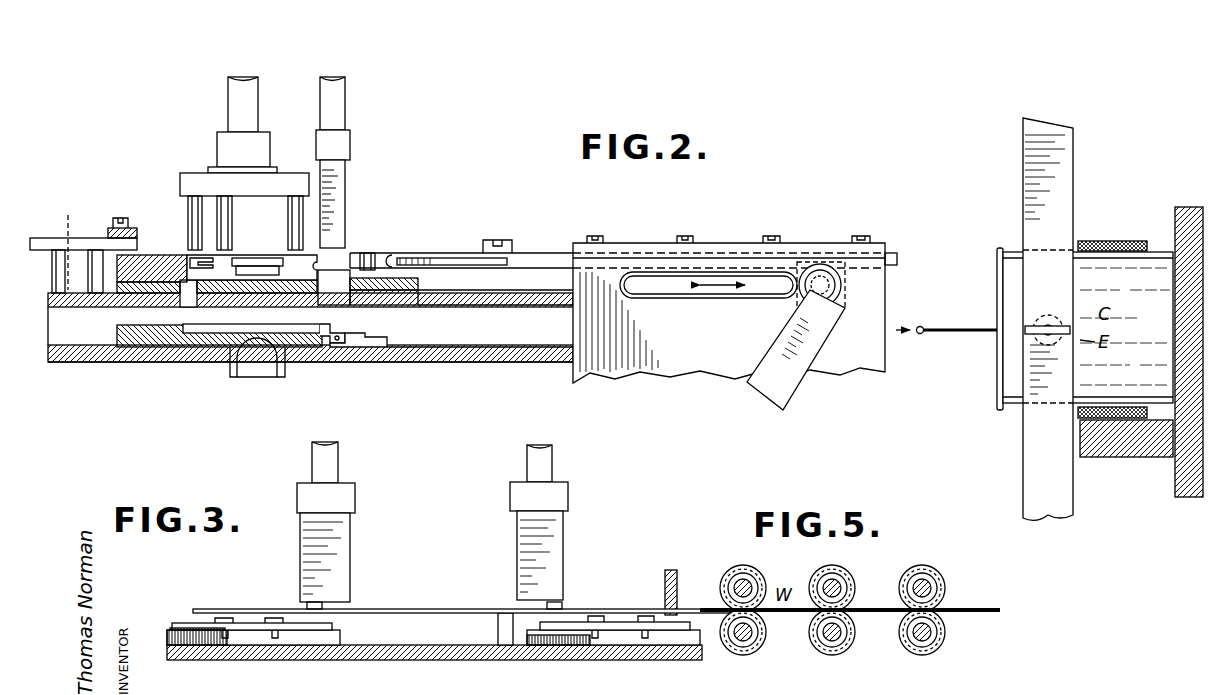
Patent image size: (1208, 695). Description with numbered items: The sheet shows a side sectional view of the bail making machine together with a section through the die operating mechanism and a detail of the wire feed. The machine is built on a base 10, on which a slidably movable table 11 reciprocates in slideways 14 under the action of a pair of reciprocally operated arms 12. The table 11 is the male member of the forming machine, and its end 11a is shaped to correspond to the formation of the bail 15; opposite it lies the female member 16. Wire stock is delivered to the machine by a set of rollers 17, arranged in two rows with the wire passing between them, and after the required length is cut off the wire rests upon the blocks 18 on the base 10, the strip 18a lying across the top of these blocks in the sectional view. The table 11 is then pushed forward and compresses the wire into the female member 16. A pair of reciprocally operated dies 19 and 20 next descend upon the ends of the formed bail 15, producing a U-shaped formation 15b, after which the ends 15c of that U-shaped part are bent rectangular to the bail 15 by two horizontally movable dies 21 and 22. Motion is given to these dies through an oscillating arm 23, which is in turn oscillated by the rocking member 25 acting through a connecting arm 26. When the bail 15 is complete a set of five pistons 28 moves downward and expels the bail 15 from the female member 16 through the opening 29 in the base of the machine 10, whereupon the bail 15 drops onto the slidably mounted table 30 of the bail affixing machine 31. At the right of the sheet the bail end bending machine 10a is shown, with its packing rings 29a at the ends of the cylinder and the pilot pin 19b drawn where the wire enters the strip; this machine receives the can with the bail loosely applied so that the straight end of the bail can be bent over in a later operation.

In FIG. 3, the base 10 is at (653, 662).
In FIG. 2, the bail end bending machine 10a is at (1021, 226).
In FIG. 2, the slidably movable table 11 is at (448, 262).
In FIG. 2, the end of the table 11a is at (395, 249).
In FIG. 2, the reciprocally operated arms 12 is at (793, 331).
In FIG. 2, the slideways 14 is at (633, 250).
In FIG. 2, the bail 15 is at (228, 330).
In FIG. 2, the U-shaped formation 15b is at (340, 325).
In FIG. 2, the ends of the U-shaped bent part 15c is at (365, 334).
In FIG. 2, the female member 16 is at (272, 256).
In FIG. 5, the rollers 17 is at (812, 572).
In FIG. 3, the blocks 18 is at (360, 630).
In FIG. 3, the strip 18a is at (446, 609).
In FIG. 3, the reciprocally operated die 19 is at (348, 549).
In FIG. 2, the pilot pin 19b is at (1048, 325).
In FIG. 2, the reciprocally operated die 20 is at (345, 190).
In FIG. 3, the reciprocally operated die 20 is at (562, 558).
In FIG. 3, the horizontally movable die 21 is at (184, 623).
In FIG. 3, the horizontally movable die 22 is at (621, 622).
In FIG. 2, the oscillating arm 23 is at (356, 270).
In FIG. 2, the rocking member 25 is at (70, 238).
In FIG. 2, the connecting arm 26 is at (137, 233).
In FIG. 2, the pistons 28 is at (217, 226).
In FIG. 2, the opening 29 is at (197, 286).
In FIG. 2, the packing rings 29a is at (1120, 229).
In FIG. 2, the slidably mounted table 30 is at (117, 336).
In FIG. 2, the bail affixing machine 31 is at (563, 372).